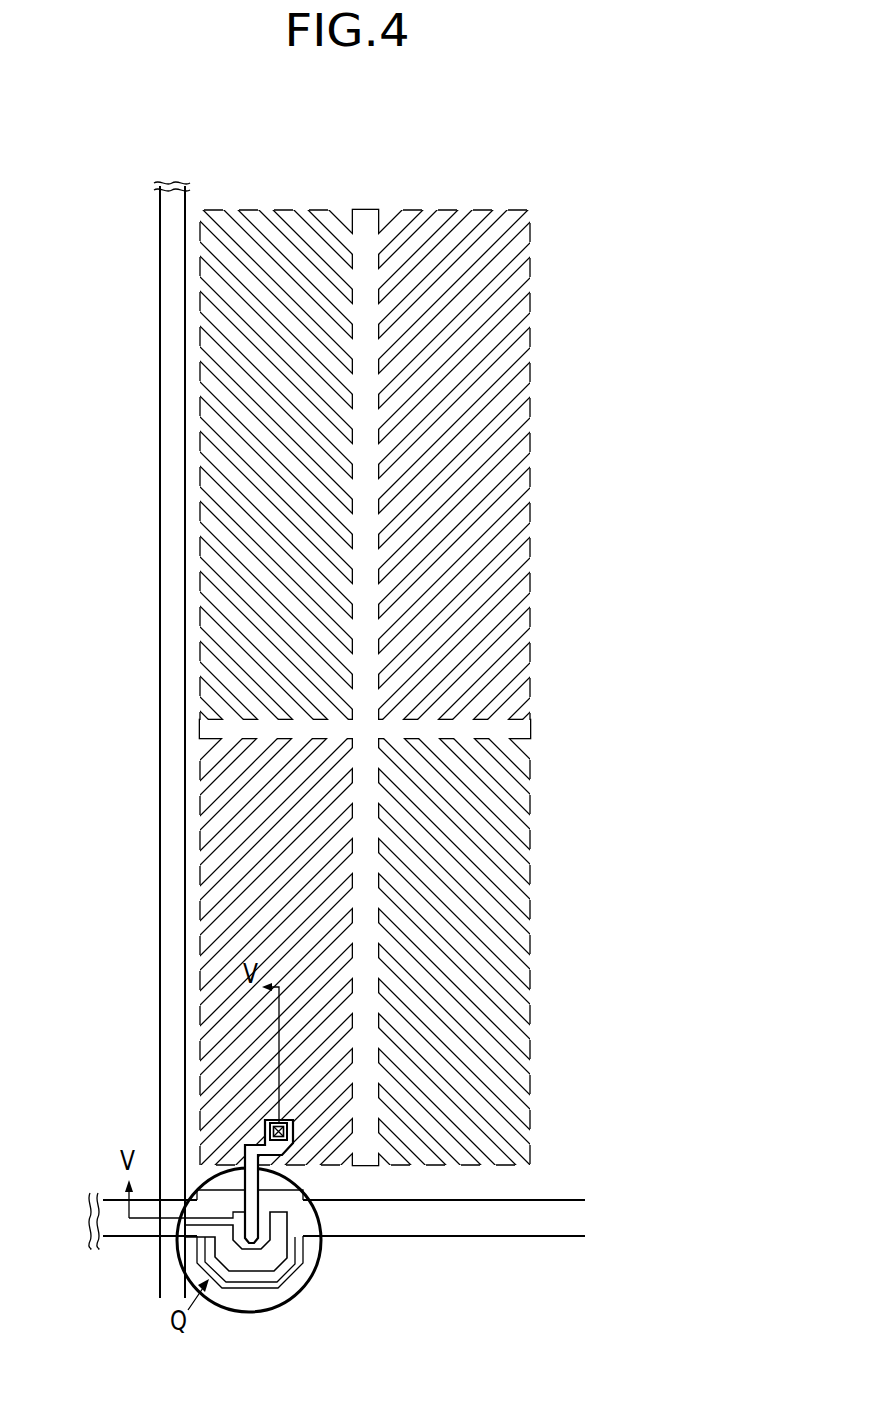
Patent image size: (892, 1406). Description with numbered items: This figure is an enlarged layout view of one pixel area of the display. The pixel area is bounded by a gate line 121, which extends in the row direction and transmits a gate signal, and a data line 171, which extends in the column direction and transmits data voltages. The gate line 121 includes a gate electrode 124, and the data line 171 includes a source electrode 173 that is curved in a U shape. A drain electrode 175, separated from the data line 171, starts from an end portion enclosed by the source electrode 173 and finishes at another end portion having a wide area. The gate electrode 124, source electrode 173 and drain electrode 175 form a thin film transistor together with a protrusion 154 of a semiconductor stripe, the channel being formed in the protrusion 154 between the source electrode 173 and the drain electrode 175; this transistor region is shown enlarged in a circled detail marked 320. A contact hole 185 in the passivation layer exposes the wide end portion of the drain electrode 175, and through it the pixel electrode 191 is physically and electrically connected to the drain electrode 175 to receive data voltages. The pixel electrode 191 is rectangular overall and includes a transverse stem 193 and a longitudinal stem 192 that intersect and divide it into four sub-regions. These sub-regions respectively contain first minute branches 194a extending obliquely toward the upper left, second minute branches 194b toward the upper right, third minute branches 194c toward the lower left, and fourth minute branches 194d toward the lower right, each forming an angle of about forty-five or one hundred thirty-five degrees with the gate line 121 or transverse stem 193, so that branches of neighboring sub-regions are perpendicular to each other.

The data line 171 is at (185, 610).
The pixel electrode 191 is at (446, 672).
The longitudinal stem 192 is at (379, 473).
The transverse stem 193 is at (403, 738).
The first minute branch 194a is at (293, 247).
The second minute branch 194b is at (493, 318).
The third minute branch 194c is at (446, 675).
The fourth minute branch 194d is at (480, 1135).
The gate line 121 is at (453, 1203).
The gate electrode 124 is at (290, 1275).
The protrusion 154 is at (255, 1250).
The source electrode 173 is at (300, 1232).
The drain electrode 175 is at (230, 1250).
The contact hole 185 is at (268, 1128).
The thin film transistor region (enlarged view) 320 is at (322, 1222).